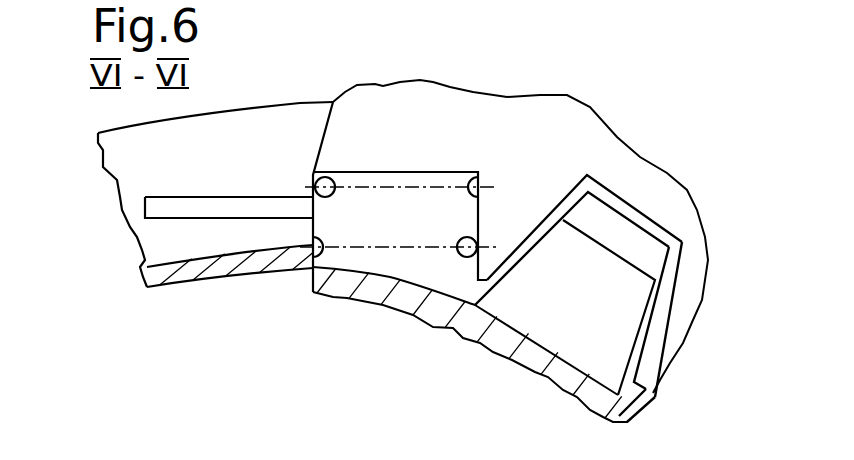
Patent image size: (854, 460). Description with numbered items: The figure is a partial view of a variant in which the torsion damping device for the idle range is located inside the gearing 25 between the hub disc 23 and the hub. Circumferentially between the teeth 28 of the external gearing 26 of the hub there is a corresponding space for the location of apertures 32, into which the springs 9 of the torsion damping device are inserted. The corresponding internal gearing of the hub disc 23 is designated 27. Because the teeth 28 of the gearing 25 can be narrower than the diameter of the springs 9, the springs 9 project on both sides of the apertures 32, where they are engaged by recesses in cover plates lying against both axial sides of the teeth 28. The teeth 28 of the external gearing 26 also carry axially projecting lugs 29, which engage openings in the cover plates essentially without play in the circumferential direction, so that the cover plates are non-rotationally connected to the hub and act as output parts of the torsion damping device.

The springs 9 is at (459, 255).
The hub disc 23 is at (635, 170).
The gearing 25 is at (584, 238).
The external gearing 26 is at (645, 337).
The internal gearing 27 is at (630, 393).
The teeth 28 is at (610, 307).
The lugs 29 is at (628, 242).
The apertures 32 is at (407, 172).